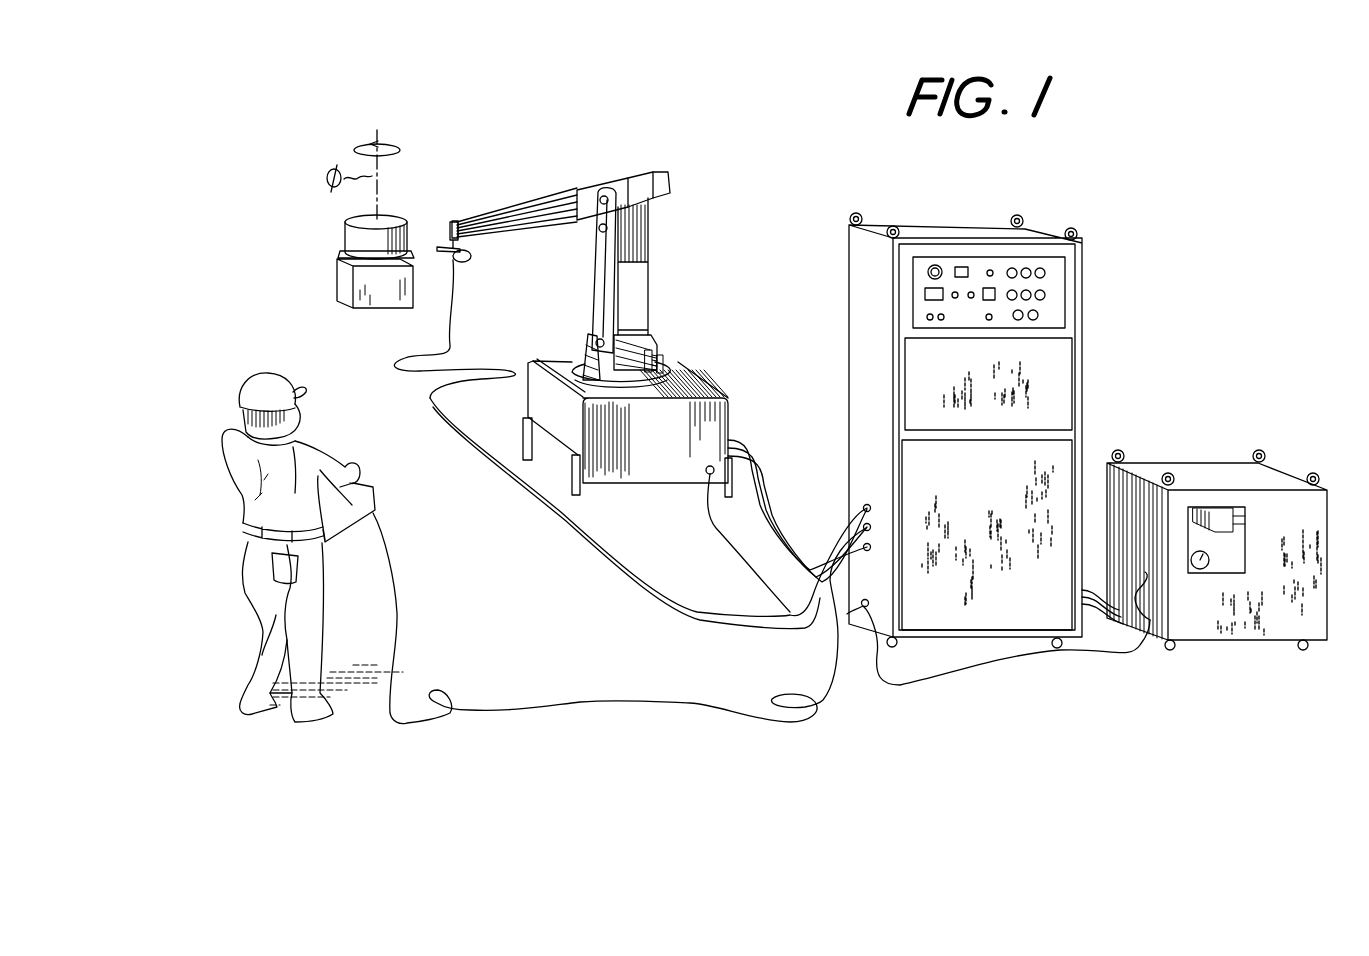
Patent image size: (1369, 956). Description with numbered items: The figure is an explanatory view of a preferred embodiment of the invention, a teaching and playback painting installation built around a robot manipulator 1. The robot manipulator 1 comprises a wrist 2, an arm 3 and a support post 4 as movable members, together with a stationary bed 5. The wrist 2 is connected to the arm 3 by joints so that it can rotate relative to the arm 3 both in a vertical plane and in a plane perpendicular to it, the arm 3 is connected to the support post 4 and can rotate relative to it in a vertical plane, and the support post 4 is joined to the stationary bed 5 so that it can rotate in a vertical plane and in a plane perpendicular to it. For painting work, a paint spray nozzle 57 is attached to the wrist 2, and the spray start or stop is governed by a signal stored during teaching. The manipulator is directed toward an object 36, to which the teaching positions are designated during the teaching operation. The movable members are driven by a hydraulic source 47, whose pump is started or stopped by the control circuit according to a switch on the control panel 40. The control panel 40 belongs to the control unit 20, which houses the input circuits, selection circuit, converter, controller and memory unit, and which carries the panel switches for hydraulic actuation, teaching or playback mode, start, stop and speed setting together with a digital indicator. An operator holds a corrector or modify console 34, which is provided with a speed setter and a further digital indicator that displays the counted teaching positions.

The robot manipulator 1 is at (713, 158).
The wrist 2 is at (472, 258).
The arm 3 is at (523, 207).
The support post 4 is at (649, 283).
The stationary bed 5 is at (708, 421).
The control unit 20 is at (1083, 380).
The corrector or modify console 34 is at (377, 503).
The object 36 is at (358, 240).
The control panel 40 is at (1053, 297).
The hydraulic source 47 is at (1208, 470).
The paint spray nozzle 57 is at (447, 246).